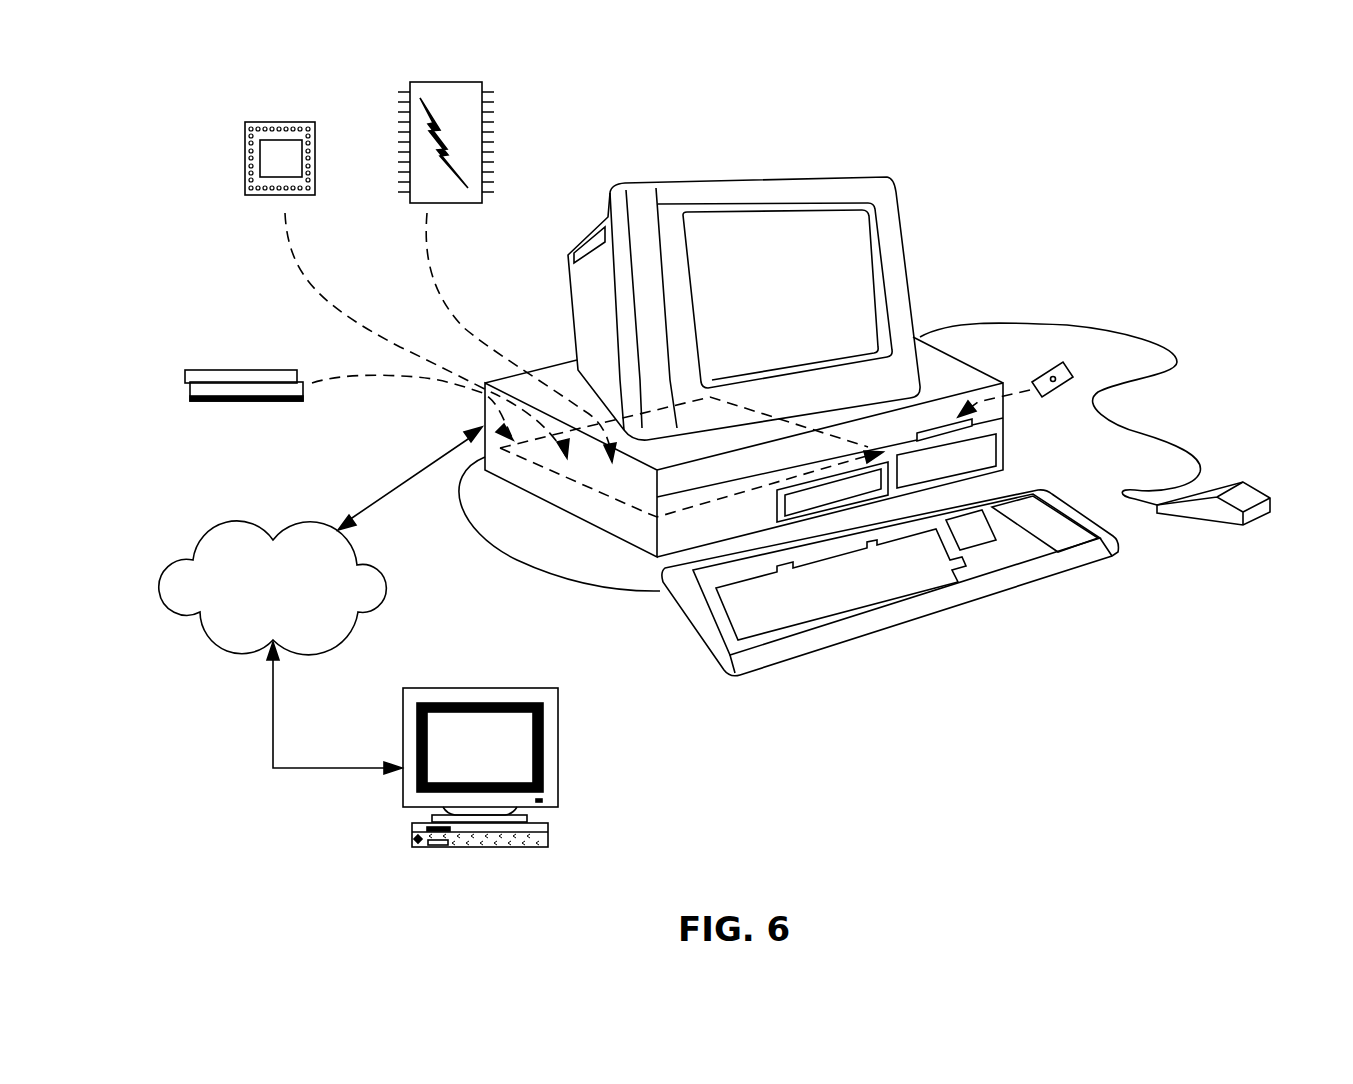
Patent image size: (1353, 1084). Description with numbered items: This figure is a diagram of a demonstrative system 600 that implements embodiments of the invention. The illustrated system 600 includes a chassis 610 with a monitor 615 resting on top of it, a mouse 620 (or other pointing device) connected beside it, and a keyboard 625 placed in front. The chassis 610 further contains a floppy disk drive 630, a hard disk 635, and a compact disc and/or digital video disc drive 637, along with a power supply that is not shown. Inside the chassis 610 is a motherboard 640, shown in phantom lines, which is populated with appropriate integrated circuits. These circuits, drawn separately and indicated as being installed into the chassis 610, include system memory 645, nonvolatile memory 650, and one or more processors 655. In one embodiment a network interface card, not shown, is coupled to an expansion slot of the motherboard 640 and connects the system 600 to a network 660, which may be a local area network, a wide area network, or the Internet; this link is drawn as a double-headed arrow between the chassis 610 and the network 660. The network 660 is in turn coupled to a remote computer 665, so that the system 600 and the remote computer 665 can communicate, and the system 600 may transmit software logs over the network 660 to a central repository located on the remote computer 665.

The system 600 is at (1078, 164).
The chassis 610 is at (563, 358).
The monitor 615 is at (832, 177).
The mouse 620 is at (1243, 527).
The keyboard 625 is at (833, 643).
The floppy disk drive 630 is at (930, 427).
The hard disk 635 is at (997, 455).
The compact disc and/or digital video disc drive 637 is at (891, 487).
The motherboard 640 is at (627, 503).
The system memory 645 is at (240, 370).
The nonvolatile memory 650 is at (480, 82).
The processor 655 is at (260, 193).
The network 660 is at (372, 621).
The remote computer 665 is at (560, 755).